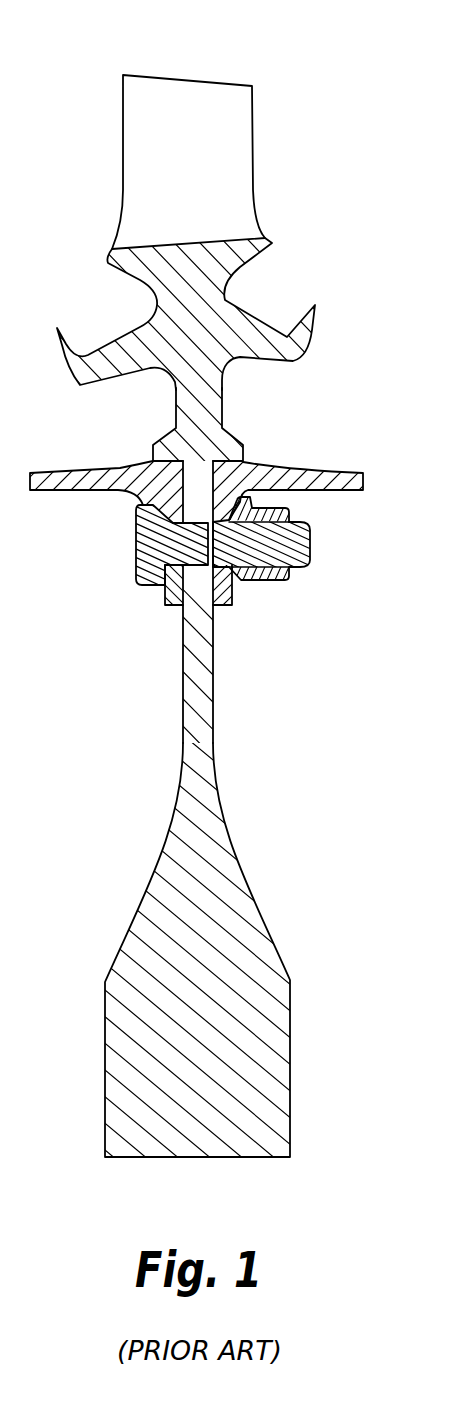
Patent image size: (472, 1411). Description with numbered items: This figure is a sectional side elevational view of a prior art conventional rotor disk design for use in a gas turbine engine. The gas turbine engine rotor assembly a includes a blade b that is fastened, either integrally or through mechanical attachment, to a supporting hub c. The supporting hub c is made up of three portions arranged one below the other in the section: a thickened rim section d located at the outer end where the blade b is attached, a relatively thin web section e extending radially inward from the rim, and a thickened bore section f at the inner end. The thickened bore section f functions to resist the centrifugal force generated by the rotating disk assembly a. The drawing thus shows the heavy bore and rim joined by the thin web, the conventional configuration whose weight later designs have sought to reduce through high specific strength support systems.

The gas turbine engine rotor assembly a is at (302, 141).
The blade b is at (228, 93).
The supporting hub c is at (212, 403).
The thickened rim section d is at (268, 248).
The web section e is at (205, 657).
The thickened bore section f is at (275, 1090).